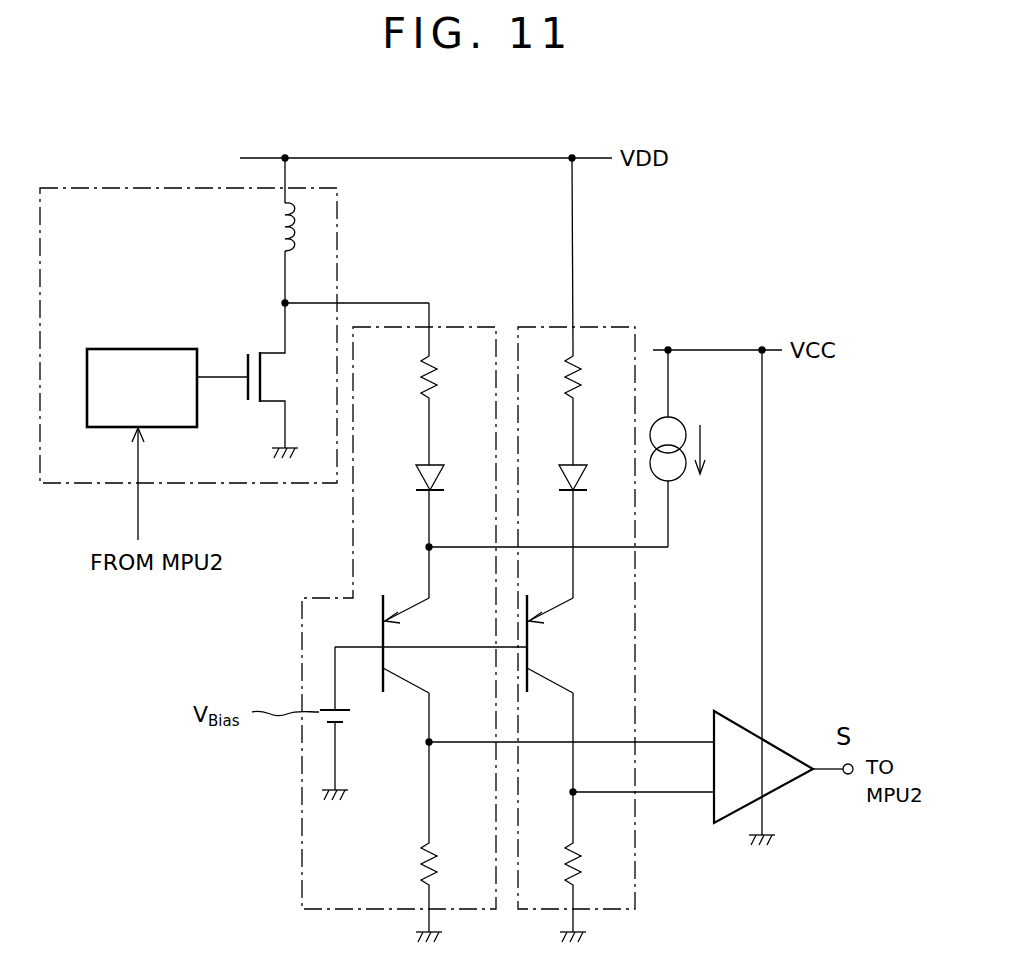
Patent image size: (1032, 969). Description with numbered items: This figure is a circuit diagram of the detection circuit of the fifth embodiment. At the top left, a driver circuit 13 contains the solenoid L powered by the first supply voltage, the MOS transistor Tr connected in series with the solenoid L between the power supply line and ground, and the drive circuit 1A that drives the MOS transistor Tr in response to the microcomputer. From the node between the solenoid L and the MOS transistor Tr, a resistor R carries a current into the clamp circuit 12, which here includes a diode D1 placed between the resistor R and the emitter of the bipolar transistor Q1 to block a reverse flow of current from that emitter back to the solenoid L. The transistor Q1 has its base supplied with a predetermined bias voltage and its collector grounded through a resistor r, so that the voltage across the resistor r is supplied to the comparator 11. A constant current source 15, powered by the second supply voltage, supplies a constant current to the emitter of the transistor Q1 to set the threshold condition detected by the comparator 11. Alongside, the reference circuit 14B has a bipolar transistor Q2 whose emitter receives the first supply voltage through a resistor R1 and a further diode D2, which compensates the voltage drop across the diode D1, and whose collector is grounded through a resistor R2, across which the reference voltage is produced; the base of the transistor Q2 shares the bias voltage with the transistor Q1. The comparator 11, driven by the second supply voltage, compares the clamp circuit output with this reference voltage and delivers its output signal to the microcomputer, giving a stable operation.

The driver circuit 13 is at (80, 186).
The drive circuit 1A is at (160, 348).
The clamp circuit 12 is at (302, 825).
The reference circuit 14B is at (583, 326).
The constant current source 15 is at (680, 426).
The comparator 11 is at (718, 712).
The MOS transistor Tr is at (270, 377).
The solenoid L is at (296, 237).
The resistor R is at (444, 376).
The resistor R1 is at (597, 280).
The resistor R2 is at (594, 867).
The resistor r is at (439, 842).
The diode D1 is at (414, 481).
The diode D2 is at (568, 481).
The bipolar transistor Q1 is at (397, 694).
The bipolar transistor Q2 is at (543, 662).